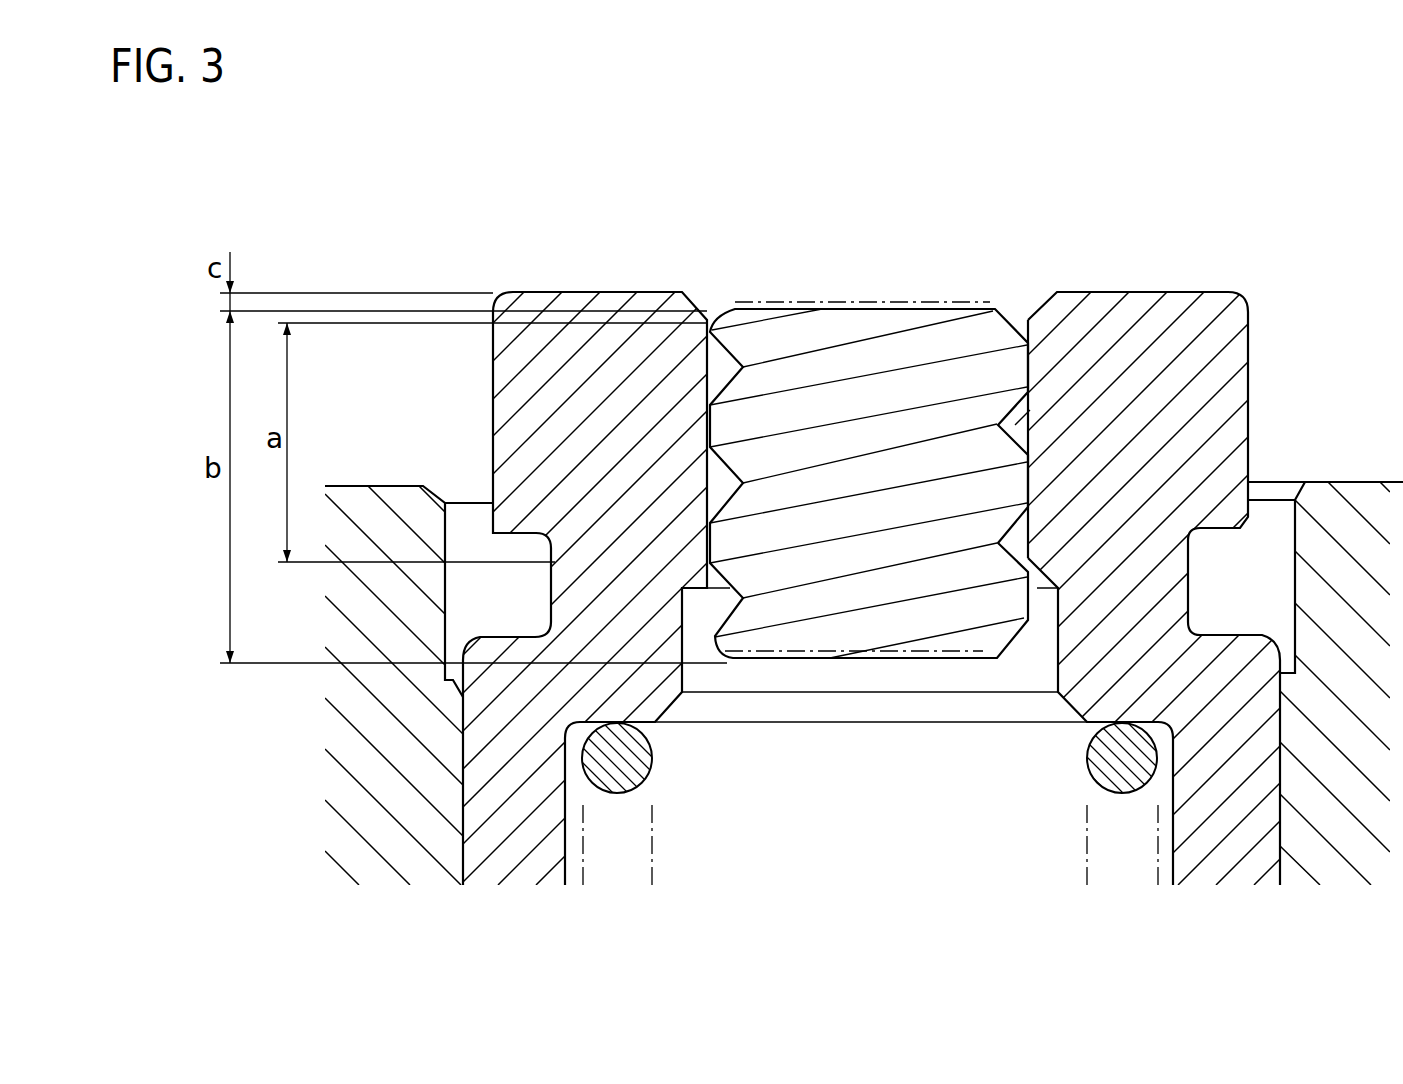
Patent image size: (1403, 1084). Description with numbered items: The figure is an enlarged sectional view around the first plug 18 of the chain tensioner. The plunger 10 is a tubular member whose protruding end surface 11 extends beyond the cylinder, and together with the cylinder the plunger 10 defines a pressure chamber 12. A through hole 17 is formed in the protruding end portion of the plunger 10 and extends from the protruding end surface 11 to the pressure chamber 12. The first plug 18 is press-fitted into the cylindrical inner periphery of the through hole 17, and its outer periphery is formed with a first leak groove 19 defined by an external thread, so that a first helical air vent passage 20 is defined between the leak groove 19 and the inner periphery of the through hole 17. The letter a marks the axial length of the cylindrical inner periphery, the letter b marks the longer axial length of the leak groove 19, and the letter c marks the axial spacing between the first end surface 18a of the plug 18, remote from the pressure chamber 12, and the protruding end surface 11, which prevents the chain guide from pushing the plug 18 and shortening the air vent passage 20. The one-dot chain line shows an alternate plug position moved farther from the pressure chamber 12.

The plunger 10 is at (1222, 825).
The protruding end surface 11 is at (1140, 292).
The pressure chamber 12 is at (871, 862).
The through hole 17 is at (1000, 542).
The first plug 18 is at (752, 662).
The first end surface 18a is at (862, 302).
The first leak groove 19 is at (1030, 443).
The first helical air vent passage 20 is at (1030, 393).